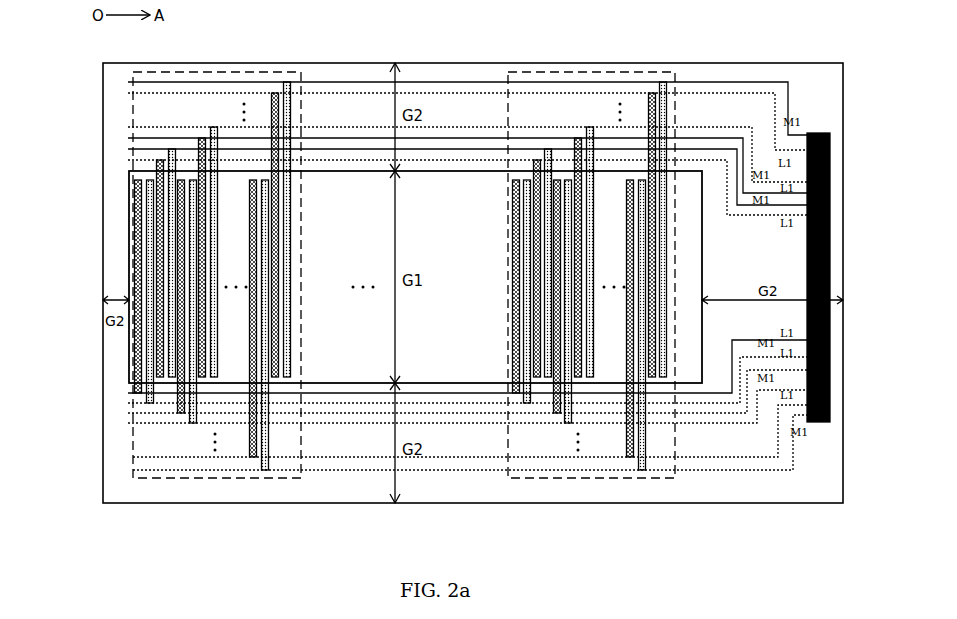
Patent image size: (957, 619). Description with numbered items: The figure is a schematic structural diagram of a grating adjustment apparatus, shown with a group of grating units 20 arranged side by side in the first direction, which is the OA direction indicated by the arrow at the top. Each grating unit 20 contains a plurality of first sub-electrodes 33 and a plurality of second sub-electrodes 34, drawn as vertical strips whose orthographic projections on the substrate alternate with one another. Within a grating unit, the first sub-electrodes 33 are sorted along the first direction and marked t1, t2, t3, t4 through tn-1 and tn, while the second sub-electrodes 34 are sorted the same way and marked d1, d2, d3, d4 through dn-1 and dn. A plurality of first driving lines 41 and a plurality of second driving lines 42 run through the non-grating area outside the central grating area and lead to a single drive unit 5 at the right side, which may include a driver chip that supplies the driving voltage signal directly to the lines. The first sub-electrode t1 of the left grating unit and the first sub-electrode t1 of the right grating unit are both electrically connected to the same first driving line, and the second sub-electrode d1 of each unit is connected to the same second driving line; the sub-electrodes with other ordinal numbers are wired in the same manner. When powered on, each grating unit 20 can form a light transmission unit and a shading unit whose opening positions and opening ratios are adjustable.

The grating unit 20 is at (213, 70).
The drive unit 5 is at (831, 265).
The first driving lines 41 is at (330, 457).
The second driving lines 42 is at (478, 470).
The first sub-electrodes 33 is at (654, 346).
The second sub-electrodes 34 is at (666, 352).
The first sub-electrode with ordinal number one t1 is at (136, 185).
The second sub-electrode with ordinal number one d1 is at (148, 200).
The first sub-electrode with ordinal number two t2 is at (159, 209).
The second sub-electrode with ordinal number two d2 is at (171, 222).
The first sub-electrode with ordinal number three t3 is at (180, 236).
The second sub-electrode with ordinal number three d3 is at (192, 248).
The first sub-electrode with ordinal number four t4 is at (201, 260).
The second sub-electrode with ordinal number four d4 is at (213, 272).
The first sub-electrode with ordinal number n-1 tn-1 is at (252, 298).
The second sub-electrode with ordinal number n-1 dn-1 is at (264, 313).
The first sub-electrode with ordinal number n tn is at (274, 328).
The second sub-electrode with ordinal number n dn is at (286, 342).